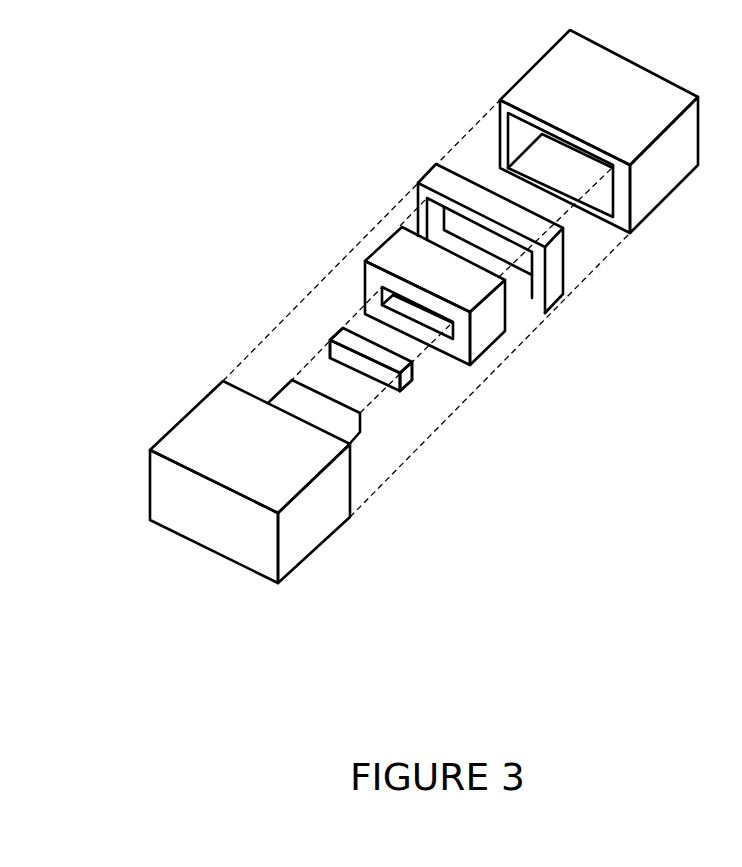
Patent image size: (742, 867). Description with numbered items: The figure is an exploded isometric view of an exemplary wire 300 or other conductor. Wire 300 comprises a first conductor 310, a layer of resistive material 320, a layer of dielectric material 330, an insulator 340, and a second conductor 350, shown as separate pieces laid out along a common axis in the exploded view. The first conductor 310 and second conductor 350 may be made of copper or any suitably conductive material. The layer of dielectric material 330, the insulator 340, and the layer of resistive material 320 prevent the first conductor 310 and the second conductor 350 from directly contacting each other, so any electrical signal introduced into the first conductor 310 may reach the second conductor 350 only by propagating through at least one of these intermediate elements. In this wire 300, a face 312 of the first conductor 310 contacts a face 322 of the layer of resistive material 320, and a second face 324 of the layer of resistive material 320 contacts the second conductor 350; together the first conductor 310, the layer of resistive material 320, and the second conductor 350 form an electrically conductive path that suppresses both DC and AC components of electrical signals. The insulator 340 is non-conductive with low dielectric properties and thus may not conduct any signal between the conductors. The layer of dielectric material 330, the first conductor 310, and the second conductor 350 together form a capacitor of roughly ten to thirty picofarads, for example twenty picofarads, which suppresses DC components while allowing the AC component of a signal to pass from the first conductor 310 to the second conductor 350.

The wire 300 is at (82, 63).
The first conductor 310 is at (188, 413).
The face 312 is at (360, 420).
The layer of resistive material 320 is at (343, 330).
The face 322 is at (329, 347).
The second face 324 is at (414, 371).
The layer of dielectric material 330 is at (383, 240).
The insulator 340 is at (429, 172).
The second conductor 350 is at (532, 68).